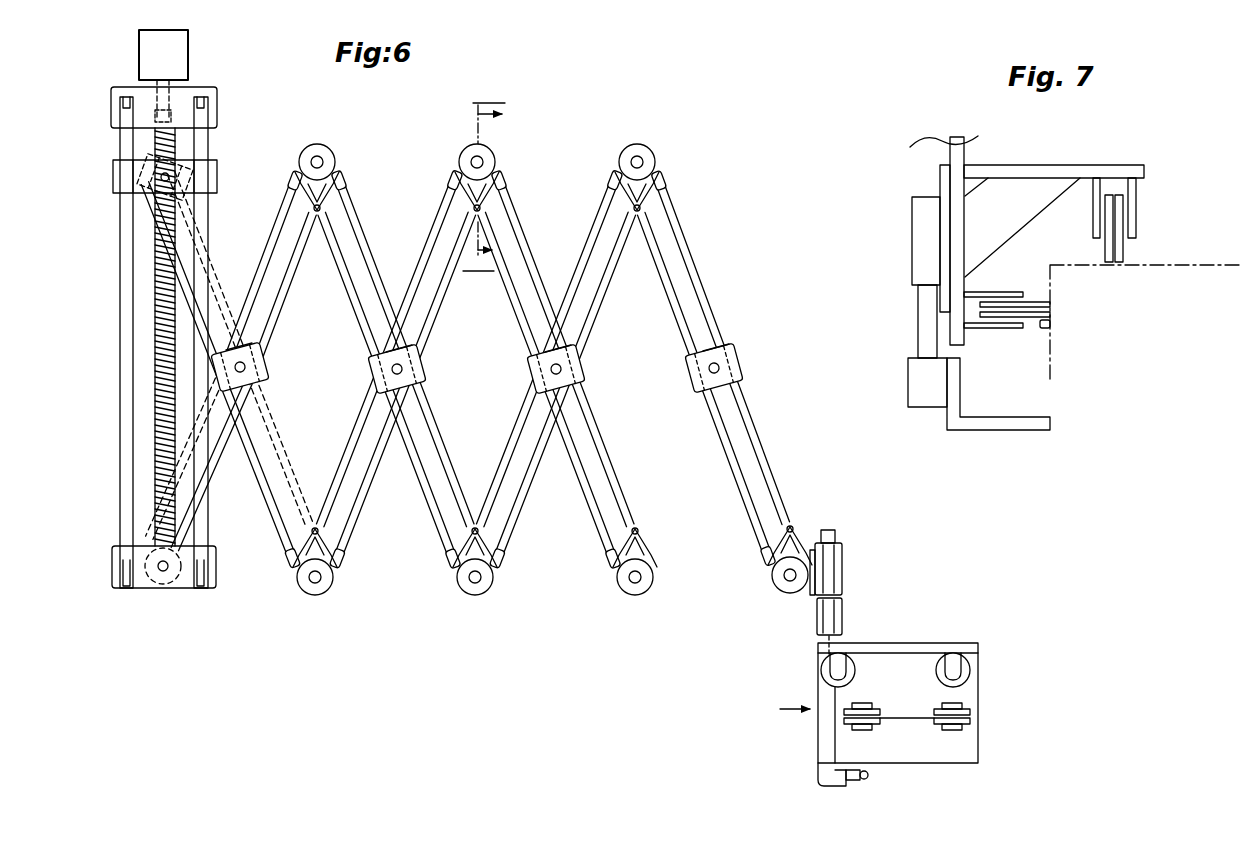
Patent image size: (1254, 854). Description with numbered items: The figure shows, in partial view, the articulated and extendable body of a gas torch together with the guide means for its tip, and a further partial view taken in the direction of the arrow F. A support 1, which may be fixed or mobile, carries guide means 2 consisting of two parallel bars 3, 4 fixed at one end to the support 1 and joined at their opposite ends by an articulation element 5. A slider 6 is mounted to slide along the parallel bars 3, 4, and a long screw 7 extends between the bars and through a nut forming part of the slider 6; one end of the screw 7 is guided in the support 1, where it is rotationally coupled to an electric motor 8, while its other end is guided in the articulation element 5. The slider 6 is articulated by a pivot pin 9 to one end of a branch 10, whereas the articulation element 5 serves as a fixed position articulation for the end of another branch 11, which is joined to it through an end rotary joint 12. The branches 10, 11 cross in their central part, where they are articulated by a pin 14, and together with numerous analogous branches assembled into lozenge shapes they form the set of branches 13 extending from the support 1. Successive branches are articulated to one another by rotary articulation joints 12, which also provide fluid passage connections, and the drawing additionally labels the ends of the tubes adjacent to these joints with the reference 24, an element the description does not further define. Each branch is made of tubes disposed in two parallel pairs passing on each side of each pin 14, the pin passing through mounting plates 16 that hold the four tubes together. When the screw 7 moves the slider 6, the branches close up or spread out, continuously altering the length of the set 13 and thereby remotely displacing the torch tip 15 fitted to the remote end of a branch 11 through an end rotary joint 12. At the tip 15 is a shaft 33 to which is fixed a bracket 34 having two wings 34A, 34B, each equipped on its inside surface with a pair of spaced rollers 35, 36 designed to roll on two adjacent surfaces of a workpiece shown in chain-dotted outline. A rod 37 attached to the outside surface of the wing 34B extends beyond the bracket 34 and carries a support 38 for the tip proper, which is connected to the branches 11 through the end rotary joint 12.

In FIG. 6, the support 1 is at (104, 126).
In FIG. 6, the guide means 2 is at (108, 259).
In FIG. 6, the parallel bar 3 is at (122, 399).
In FIG. 6, the parallel bar 4 is at (206, 276).
In FIG. 6, the articulation element 5 is at (192, 590).
In FIG. 6, the slider 6 is at (110, 169).
In FIG. 6, the screw 7 is at (155, 321).
In FIG. 6, the electric motor 8 is at (190, 56).
In FIG. 6, the pivot pin 9 is at (158, 186).
In FIG. 6, the branch 10 is at (230, 258).
In FIG. 6, the branch 11 is at (221, 480).
In FIG. 6, the rotary articulation joint 12 is at (320, 147).
In FIG. 6, the set of branches 13 is at (392, 164).
In FIG. 6, the articulation pin 14 is at (262, 386).
In FIG. 6, the torch tip 15 is at (876, 616).
In FIG. 6, the mounting plate 16 is at (262, 350).
In FIG. 6, the link end pad 24 is at (296, 178).
In FIG. 6, the shaft 33 is at (843, 563).
In FIG. 6, the bracket 34 is at (926, 646).
In FIG. 7, the bracket 34 is at (1072, 170).
In FIG. 7, the wing 34A is at (1028, 166).
In FIG. 7, the wing 34B is at (950, 240).
In FIG. 6, the roller 35 is at (935, 671).
In FIG. 7, the roller 35 is at (1130, 250).
In FIG. 6, the roller 36 is at (952, 724).
In FIG. 7, the roller 36 is at (1050, 328).
In FIG. 7, the rod 37 is at (937, 346).
In FIG. 7, the support for the tip proper 38 is at (952, 427).